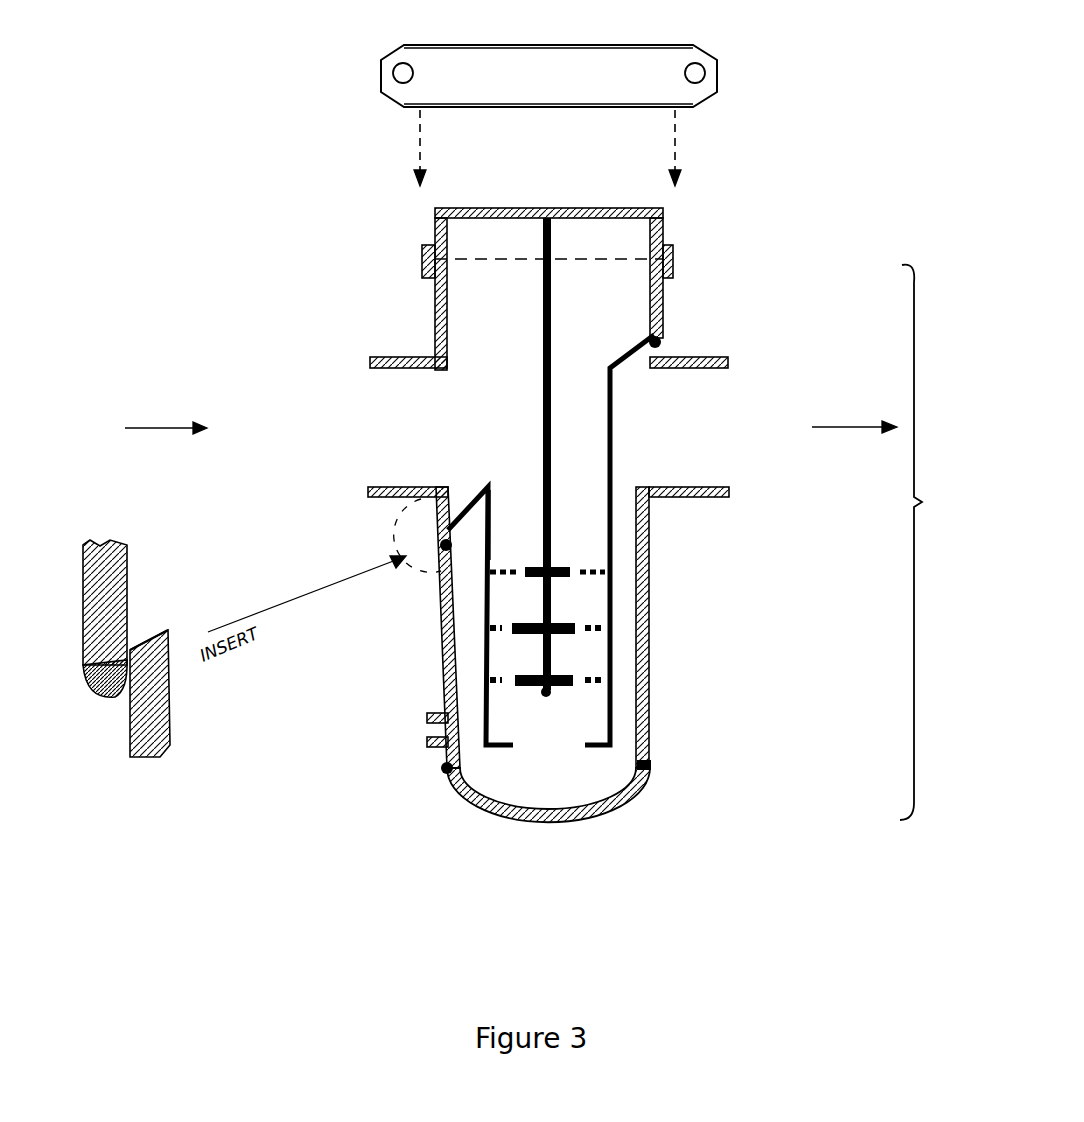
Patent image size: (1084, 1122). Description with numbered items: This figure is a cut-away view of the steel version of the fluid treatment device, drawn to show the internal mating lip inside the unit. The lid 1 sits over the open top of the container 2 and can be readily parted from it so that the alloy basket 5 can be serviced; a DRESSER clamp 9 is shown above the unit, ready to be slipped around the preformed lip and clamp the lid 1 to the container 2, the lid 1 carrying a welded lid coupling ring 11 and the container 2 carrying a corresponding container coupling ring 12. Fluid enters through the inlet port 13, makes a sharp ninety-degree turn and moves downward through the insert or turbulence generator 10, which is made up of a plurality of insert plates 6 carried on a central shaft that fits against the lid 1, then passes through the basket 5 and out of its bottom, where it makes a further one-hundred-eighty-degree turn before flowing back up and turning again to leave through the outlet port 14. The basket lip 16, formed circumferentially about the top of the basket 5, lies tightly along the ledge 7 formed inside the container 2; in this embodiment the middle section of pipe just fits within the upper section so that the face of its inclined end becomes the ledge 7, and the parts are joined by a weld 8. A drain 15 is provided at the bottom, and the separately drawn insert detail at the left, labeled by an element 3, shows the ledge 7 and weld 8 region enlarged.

The lid 1 is at (690, 215).
The container 2 is at (100, 545).
The insert block 3 is at (170, 758).
The basket 5 is at (640, 447).
The insert plate 6 is at (612, 568).
The ledge 7 is at (147, 640).
The weld 8 is at (660, 343).
The DRESSER clamp 9 is at (725, 60).
The insert or turbulence generator 10 is at (545, 402).
The lid (DRESSER) coupling ring 11 is at (688, 256).
The container (DRESSER) coupling ring 12 is at (680, 268).
The inlet port 13 is at (438, 442).
The outlet port 14 is at (725, 410).
The drain 15 is at (420, 733).
The basket lip 16 is at (615, 372).